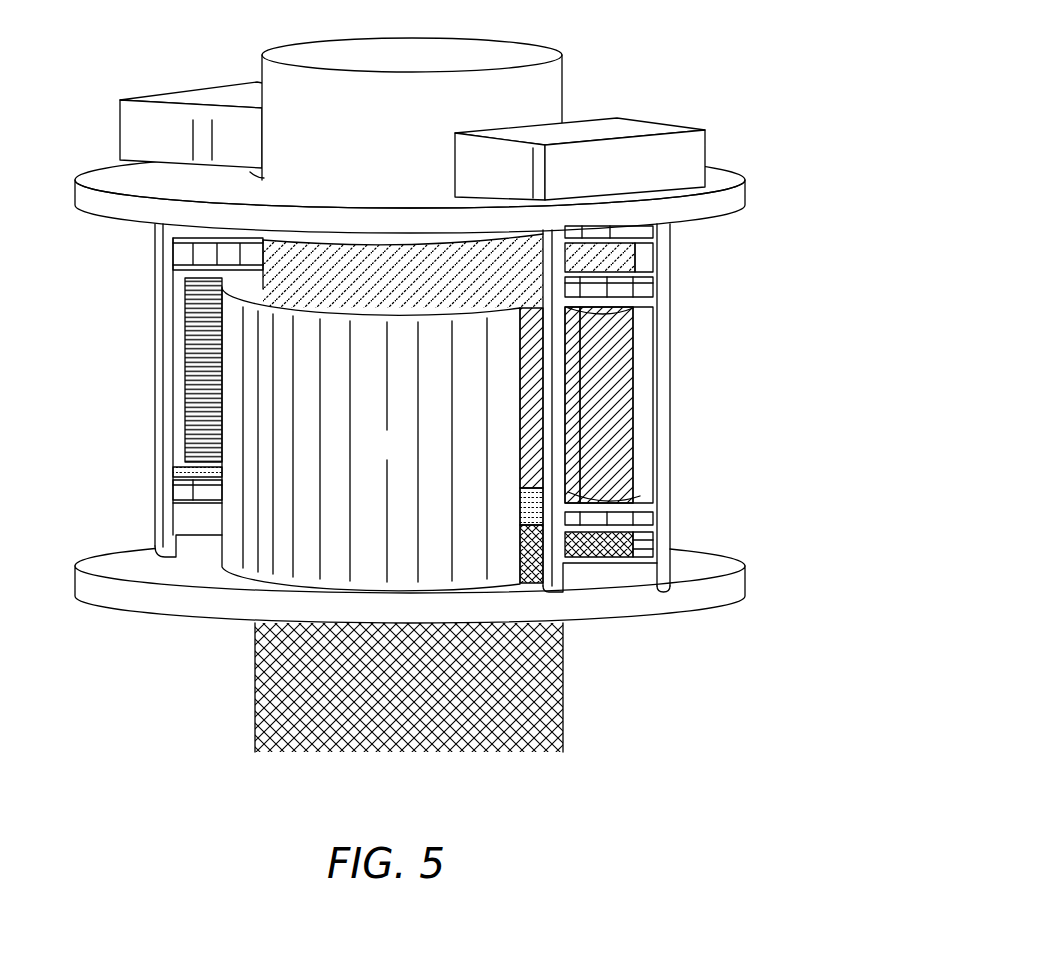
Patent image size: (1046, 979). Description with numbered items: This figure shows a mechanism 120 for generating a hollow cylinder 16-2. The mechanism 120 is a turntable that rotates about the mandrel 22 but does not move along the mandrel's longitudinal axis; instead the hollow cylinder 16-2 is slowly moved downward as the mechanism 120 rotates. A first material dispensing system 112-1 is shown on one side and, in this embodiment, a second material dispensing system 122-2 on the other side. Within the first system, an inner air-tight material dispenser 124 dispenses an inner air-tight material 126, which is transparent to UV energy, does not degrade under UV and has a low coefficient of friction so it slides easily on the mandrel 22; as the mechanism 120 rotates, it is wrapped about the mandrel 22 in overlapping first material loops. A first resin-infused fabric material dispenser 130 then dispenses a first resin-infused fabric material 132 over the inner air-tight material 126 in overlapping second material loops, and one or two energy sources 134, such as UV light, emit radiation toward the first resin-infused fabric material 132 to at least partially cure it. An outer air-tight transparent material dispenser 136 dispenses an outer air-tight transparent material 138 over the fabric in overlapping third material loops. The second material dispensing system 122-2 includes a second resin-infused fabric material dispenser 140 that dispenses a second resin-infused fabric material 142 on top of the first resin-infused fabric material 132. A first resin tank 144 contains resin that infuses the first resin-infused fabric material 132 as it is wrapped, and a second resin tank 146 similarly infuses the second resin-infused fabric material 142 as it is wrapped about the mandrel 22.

The mechanism 120 is at (795, 112).
The mandrel 22 is at (541, 80).
The first resin tank 144 is at (680, 160).
The second resin tank 146 is at (122, 127).
The housing 112-1 is at (780, 200).
The second material dispensing system 122-2 is at (130, 228).
The inner air-tight material dispenser 124 is at (662, 253).
The inner air-tight material 126 is at (440, 288).
The first resin-infused fabric material dispenser 130 is at (652, 405).
The first resin-infused fabric material 132 is at (575, 490).
The energy source 134 is at (416, 457).
The outer air-tight transparent material dispenser 136 is at (650, 540).
The outer air-tight transparent material 138 is at (598, 548).
The second resin-infused fabric material dispenser 140 is at (176, 300).
The second resin-infused fabric material 142 is at (200, 438).
The hollow cylinder 16-2 is at (535, 695).